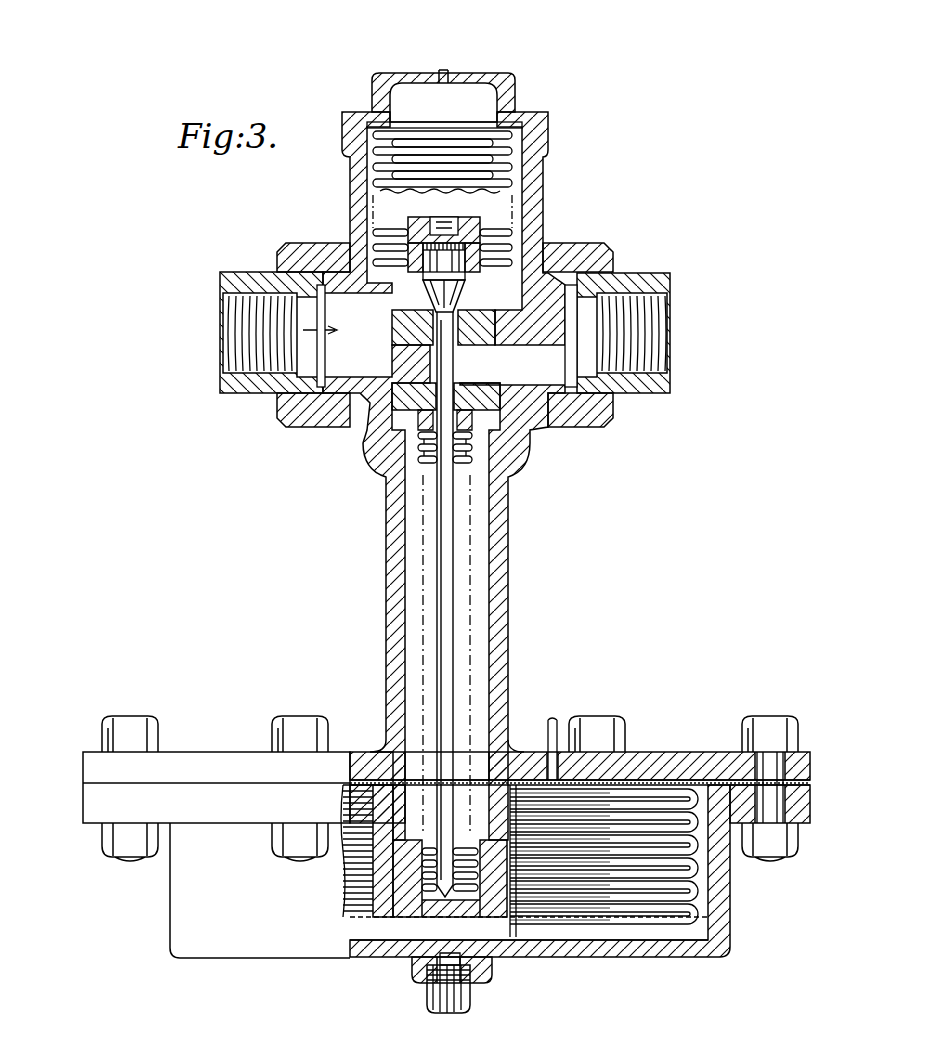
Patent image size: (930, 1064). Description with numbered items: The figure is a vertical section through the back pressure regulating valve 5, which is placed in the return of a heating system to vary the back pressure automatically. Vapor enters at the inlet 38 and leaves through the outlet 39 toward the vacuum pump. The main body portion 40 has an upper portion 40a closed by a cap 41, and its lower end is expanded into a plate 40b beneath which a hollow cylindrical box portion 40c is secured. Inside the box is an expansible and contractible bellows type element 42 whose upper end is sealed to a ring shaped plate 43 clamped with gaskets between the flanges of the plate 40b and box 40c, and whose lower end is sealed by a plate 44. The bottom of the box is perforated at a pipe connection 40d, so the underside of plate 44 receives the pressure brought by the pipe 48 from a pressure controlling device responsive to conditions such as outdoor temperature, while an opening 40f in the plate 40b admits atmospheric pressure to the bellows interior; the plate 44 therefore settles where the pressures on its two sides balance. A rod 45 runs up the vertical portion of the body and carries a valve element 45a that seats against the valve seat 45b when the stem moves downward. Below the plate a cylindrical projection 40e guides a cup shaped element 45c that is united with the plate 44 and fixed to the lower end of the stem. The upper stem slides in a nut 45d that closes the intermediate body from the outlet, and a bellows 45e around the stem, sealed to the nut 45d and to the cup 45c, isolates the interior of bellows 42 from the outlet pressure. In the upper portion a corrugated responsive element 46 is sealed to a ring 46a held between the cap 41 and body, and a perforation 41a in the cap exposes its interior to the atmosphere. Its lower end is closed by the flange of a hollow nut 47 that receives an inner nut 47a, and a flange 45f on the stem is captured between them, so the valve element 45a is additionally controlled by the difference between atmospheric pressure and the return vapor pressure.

The valve 5 is at (532, 573).
The inlet 38 is at (232, 340).
The outlet 39 is at (660, 341).
The main body portion 40 is at (392, 608).
The upper portion 40a is at (355, 178).
The plate 40b is at (202, 765).
The hollow cylindrical box portion 40c is at (720, 924).
The pipe connection 40d is at (467, 958).
The cylindrical projection 40e is at (403, 887).
The opening 40f is at (552, 752).
The cap 41 is at (510, 96).
The perforation 41a is at (446, 73).
The bellows type element 42 is at (700, 853).
The plate 43 is at (615, 780).
The plate 44 is at (597, 920).
The rod 45 is at (445, 511).
The valve element 45a is at (437, 301).
The valve seat 45b is at (472, 318).
The cylindrical cup shaped element 45c is at (425, 915).
The nut 45d is at (427, 388).
The bellows 45e is at (420, 452).
The flange 45f is at (408, 225).
The flexible responsive element 46 is at (512, 166).
The ring 46a is at (548, 132).
The hollow nut 47 is at (478, 223).
The nut 47a is at (408, 268).
The pipe 48 is at (445, 1005).